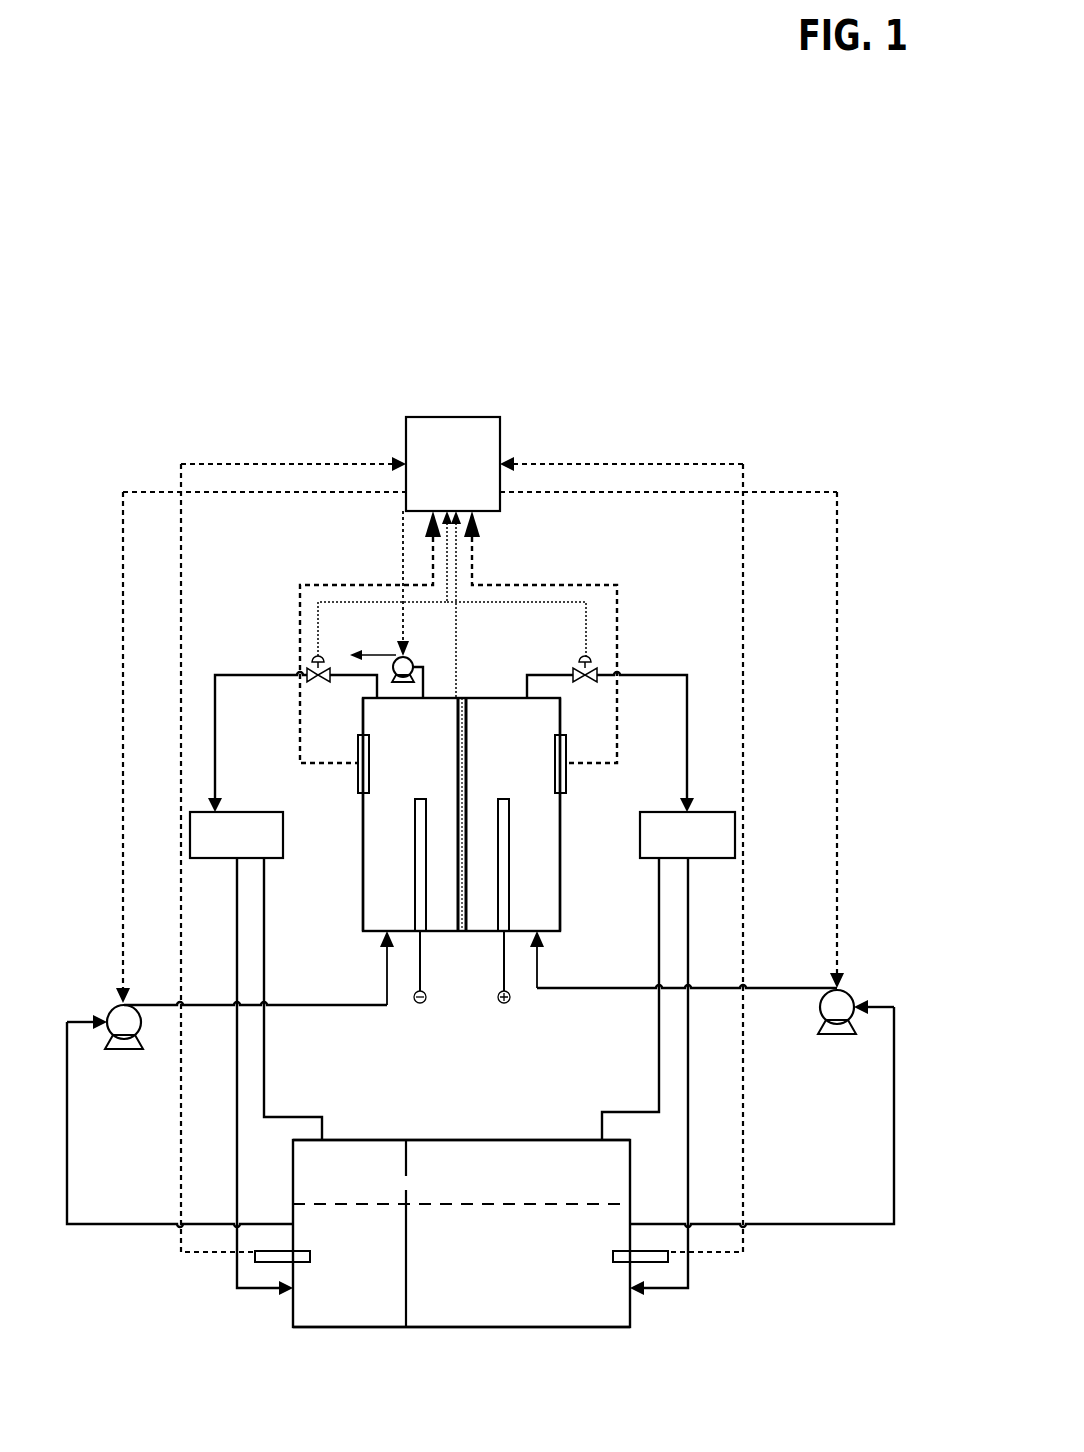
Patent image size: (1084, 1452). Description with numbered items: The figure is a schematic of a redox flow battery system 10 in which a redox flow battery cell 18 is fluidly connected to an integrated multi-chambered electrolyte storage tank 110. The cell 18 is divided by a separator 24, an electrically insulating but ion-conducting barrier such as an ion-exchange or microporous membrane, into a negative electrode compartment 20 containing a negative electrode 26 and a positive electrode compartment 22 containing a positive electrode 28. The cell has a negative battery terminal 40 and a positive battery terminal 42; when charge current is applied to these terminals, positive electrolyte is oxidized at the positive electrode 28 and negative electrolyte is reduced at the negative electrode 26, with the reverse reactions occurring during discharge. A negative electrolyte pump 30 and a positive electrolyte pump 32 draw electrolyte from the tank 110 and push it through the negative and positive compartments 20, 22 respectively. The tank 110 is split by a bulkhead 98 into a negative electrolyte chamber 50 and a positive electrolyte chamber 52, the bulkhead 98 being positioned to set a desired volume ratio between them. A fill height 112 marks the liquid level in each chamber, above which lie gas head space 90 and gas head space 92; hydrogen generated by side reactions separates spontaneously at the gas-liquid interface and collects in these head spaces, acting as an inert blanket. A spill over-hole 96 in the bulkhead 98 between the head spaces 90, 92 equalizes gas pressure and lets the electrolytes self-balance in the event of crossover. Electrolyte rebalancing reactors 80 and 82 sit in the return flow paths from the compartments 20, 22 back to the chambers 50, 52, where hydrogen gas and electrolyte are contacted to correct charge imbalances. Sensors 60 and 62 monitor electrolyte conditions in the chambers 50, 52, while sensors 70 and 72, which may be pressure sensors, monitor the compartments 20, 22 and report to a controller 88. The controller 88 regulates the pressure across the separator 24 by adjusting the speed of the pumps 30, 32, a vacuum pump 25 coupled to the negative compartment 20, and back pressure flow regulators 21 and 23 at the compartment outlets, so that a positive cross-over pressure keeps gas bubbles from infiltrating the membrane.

The redox flow battery system 10 is at (110, 345).
The redox flow battery cell 18 is at (471, 658).
The negative electrode compartment 20 is at (401, 751).
The positive electrode compartment 22 is at (504, 751).
The separator 24 is at (467, 763).
The back pressure flow regulator 21 is at (325, 668).
The back pressure flow regulator 23 is at (578, 668).
The vacuum pump 25 is at (397, 655).
The negative electrode 26 is at (415, 858).
The positive electrode 28 is at (509, 858).
The negative electrolyte pump 30 is at (120, 1062).
The positive electrolyte pump 32 is at (834, 1060).
The negative battery terminal 40 is at (421, 976).
The positive battery terminal 42 is at (503, 976).
The negative electrolyte chamber 50 is at (335, 1278).
The positive electrolyte chamber 52 is at (568, 1281).
The sensor 60 is at (275, 1250).
The sensor 62 is at (642, 1250).
The sensor 70 is at (358, 786).
The sensor 72 is at (566, 786).
The electrolyte rebalancing reactor 80 is at (223, 850).
The electrolyte rebalancing reactor 82 is at (674, 850).
The controller 88 is at (438, 478).
The gas head space 90 is at (335, 1191).
The gas head space 92 is at (551, 1191).
The spill over-hole 96 is at (408, 1182).
The bulkhead 98 is at (406, 1297).
The multi-chambered electrolyte storage tank 110 is at (442, 1106).
The fill height 112 is at (455, 1205).